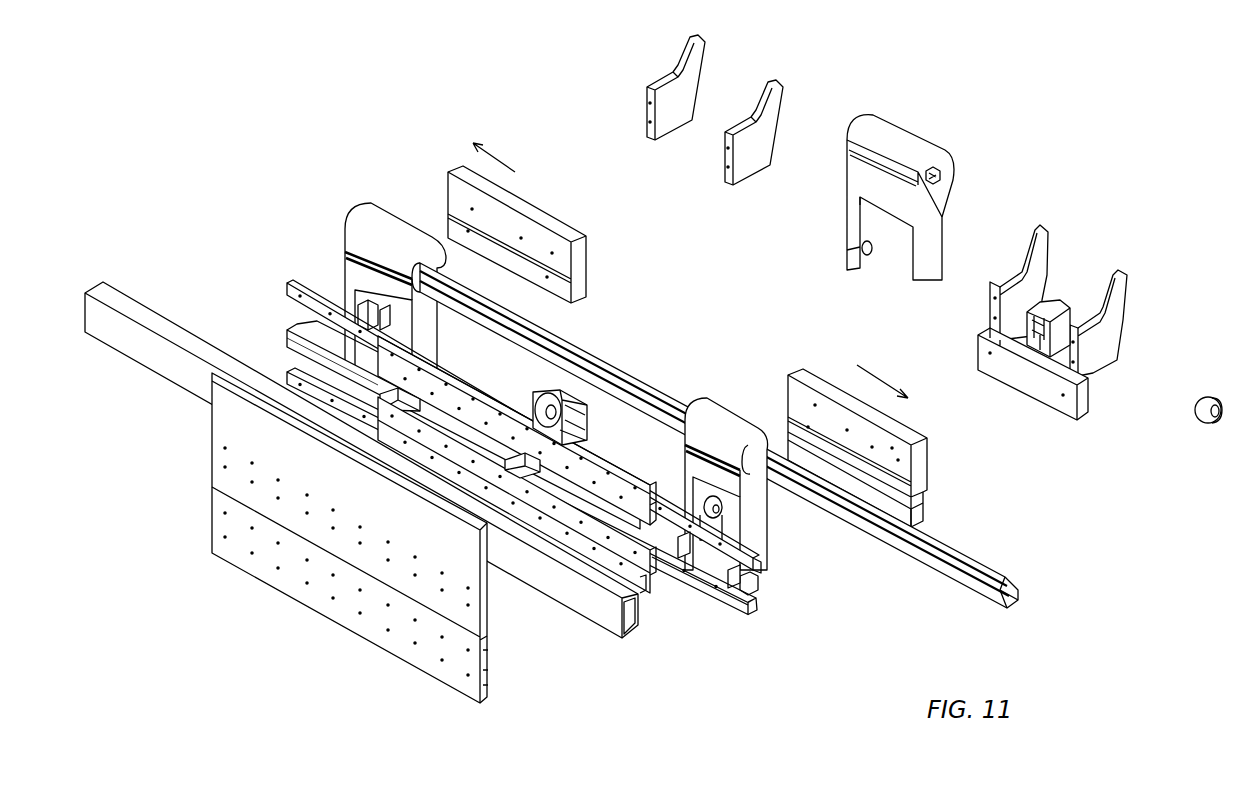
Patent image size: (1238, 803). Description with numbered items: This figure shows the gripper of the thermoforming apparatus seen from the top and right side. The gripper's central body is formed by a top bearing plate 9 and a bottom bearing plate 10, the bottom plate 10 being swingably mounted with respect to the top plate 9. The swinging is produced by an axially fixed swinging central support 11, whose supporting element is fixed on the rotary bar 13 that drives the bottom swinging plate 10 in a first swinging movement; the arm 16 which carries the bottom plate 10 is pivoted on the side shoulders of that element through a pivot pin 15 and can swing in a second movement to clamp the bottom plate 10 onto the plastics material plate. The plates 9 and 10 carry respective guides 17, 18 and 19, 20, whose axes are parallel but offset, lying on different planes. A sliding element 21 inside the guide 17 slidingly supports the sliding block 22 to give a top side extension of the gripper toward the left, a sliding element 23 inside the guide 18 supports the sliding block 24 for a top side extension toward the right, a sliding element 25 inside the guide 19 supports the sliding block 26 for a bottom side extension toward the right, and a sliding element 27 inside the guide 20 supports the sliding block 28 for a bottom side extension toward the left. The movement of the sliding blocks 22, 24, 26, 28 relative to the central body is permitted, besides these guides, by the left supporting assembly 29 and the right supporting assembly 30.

The top bearing plate 9 is at (509, 625).
The bottom bearing plate 10 is at (504, 692).
The swinging central support 11 is at (975, 131).
The rotary bar 13 is at (667, 392).
The pivot pin 15 is at (753, 565).
The arm 16 is at (560, 392).
The guide 17 is at (633, 480).
The guide 18 is at (617, 497).
The guide 19 is at (655, 583).
The guide 20 is at (640, 582).
The sliding element 21 is at (288, 287).
The sliding block 22 is at (520, 215).
The sliding element 23 is at (740, 583).
The sliding block 24 is at (927, 458).
The sliding element 25 is at (747, 620).
The sliding block 26 is at (920, 507).
The sliding element 27 is at (285, 367).
The sliding block 28 is at (297, 328).
The left supporting assembly 29 is at (713, 408).
The right supporting assembly 30 is at (392, 225).